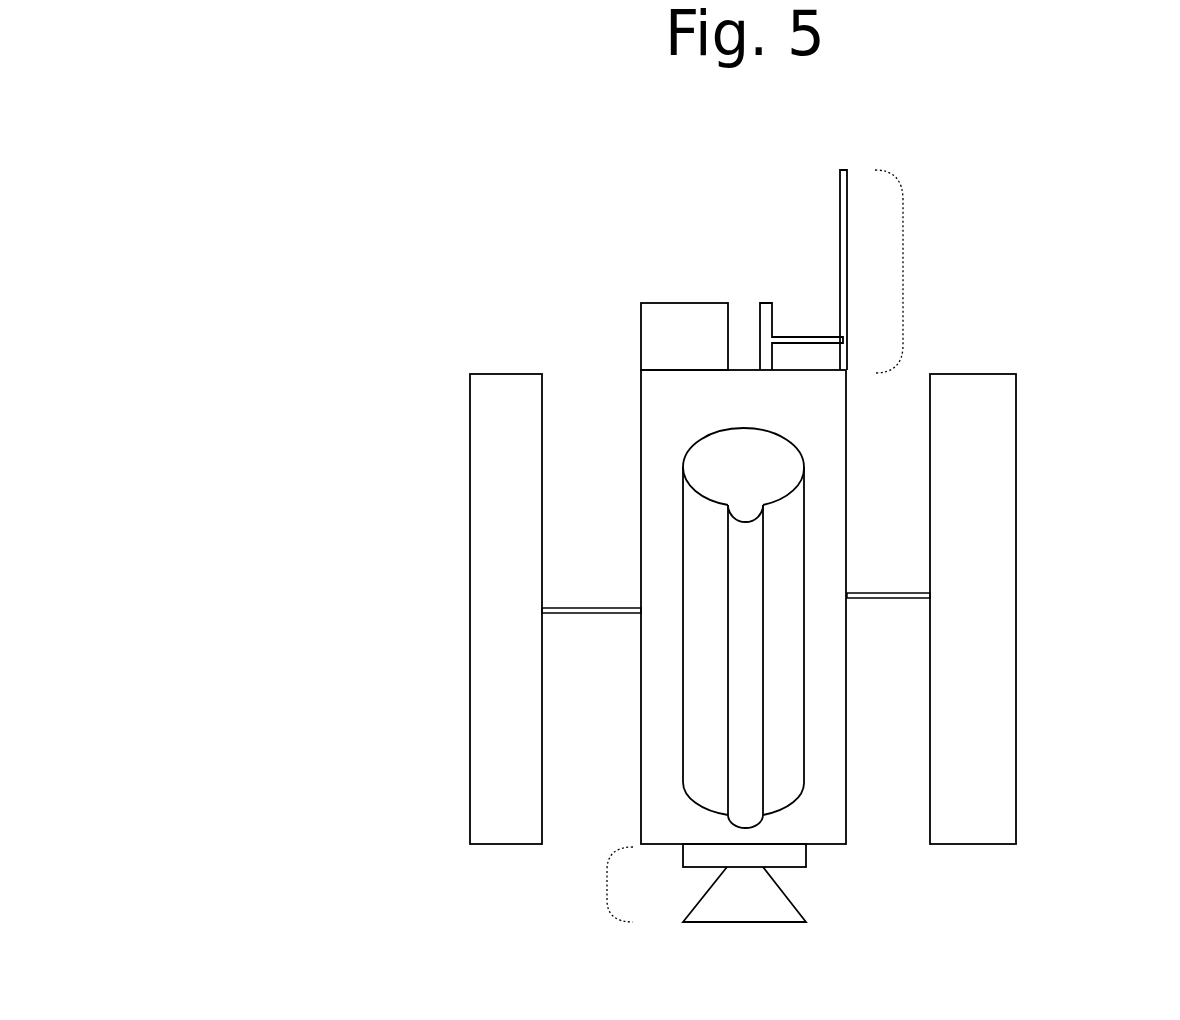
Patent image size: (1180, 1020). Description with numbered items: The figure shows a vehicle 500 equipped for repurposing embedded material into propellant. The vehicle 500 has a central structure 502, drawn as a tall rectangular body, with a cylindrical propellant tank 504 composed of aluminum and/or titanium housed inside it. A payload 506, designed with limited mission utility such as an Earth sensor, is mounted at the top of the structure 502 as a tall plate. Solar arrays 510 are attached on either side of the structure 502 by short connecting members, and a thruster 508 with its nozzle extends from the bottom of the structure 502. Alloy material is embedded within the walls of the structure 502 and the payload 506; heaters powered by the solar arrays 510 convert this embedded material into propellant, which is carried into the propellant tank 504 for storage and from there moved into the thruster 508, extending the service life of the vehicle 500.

The vehicle 500 is at (283, 153).
The structure 502 is at (651, 391).
The propellant tank 504 is at (690, 762).
The payload 506 is at (903, 272).
The thruster 508 is at (607, 884).
The solar array 510 is at (1023, 505).